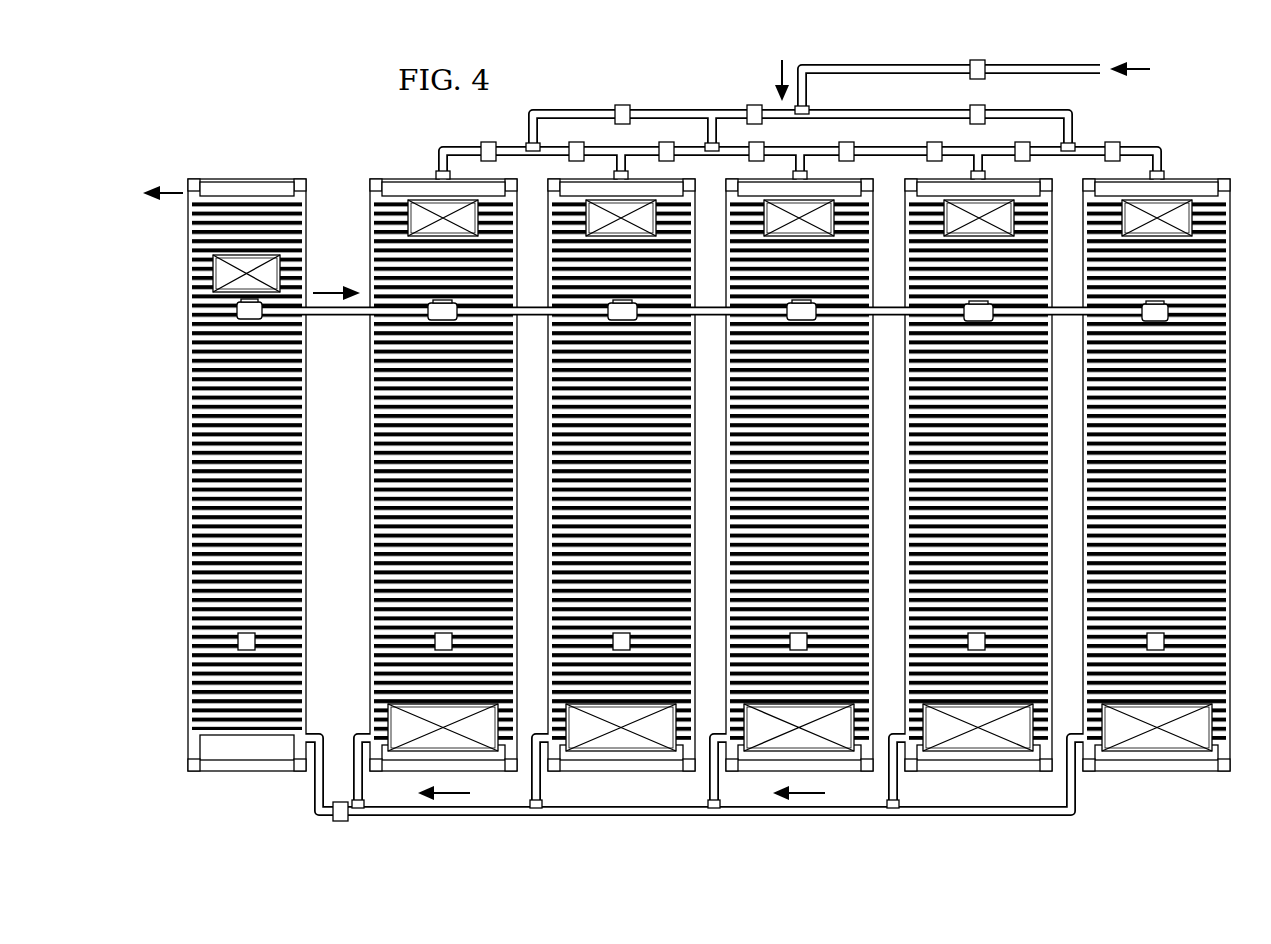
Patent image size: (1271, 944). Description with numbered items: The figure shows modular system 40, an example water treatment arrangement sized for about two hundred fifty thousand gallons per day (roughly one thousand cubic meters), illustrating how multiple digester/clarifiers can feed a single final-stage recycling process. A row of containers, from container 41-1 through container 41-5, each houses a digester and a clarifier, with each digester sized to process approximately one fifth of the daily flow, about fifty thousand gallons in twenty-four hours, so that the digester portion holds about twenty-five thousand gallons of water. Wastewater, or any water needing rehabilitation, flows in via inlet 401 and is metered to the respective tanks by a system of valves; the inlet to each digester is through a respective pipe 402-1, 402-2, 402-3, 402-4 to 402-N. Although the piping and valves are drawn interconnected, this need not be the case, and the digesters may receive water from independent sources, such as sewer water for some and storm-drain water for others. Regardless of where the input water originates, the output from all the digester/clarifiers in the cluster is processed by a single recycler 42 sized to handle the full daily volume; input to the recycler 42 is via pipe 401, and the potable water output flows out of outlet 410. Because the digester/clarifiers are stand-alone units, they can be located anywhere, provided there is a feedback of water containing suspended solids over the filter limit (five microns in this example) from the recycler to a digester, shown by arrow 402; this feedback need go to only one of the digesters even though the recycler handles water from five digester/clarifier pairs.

The modular system 40 is at (322, 108).
The outlet 410 is at (172, 190).
The recycler 42 is at (243, 773).
The container 41-5 is at (394, 182).
The container 41-1 is at (1206, 184).
The inlet pipe 401 is at (603, 806).
The feedback arrow 402 is at (345, 322).
The pipe 402-1 is at (442, 321).
The pipe 402-2 is at (622, 321).
The pipe 402-3 is at (801, 321).
The pipe 402-4 is at (978, 322).
The pipe 402-N is at (1156, 322).